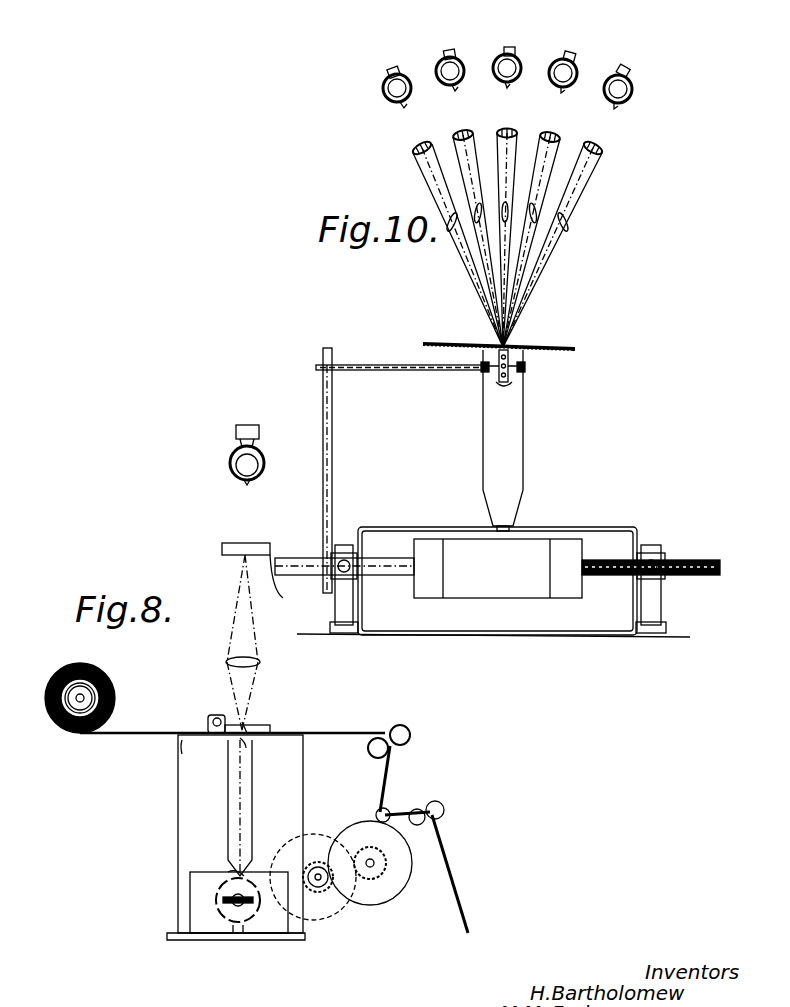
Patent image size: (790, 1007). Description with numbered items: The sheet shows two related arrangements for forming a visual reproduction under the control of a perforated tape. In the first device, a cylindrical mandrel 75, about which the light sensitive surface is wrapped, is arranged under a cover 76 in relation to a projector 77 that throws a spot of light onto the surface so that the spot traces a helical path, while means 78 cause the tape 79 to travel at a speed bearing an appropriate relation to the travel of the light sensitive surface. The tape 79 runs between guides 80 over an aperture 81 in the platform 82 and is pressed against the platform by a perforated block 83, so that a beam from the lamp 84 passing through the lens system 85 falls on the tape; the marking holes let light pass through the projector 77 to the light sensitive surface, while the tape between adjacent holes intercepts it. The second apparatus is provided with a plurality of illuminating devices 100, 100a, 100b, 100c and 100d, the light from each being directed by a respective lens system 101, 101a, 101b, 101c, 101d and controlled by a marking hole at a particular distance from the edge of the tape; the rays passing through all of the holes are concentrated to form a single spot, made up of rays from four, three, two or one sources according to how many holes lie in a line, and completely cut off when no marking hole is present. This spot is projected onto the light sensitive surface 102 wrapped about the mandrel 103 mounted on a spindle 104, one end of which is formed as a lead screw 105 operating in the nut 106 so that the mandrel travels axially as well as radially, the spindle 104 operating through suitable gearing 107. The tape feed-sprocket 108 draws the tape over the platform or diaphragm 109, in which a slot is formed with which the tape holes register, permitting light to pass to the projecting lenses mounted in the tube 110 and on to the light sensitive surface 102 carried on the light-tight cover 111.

In FIG. 10, the illuminating device 100 is at (385, 81).
In FIG. 10, the illuminating device 100a is at (446, 60).
In FIG. 10, the illuminating device 100b is at (506, 48).
In FIG. 10, the illuminating device 100c is at (577, 45).
In FIG. 10, the illuminating device 100d is at (630, 60).
In FIG. 10, the lens system 101 is at (414, 148).
In FIG. 10, the lens system 101a is at (458, 132).
In FIG. 10, the lens system 101b is at (512, 118).
In FIG. 10, the lens system 101c is at (566, 125).
In FIG. 10, the lens system 101d is at (607, 138).
In FIG. 10, the light sensitive surface 102 is at (537, 548).
In FIG. 10, the mandrel 103 is at (570, 552).
In FIG. 10, the spindle 104 is at (371, 557).
In FIG. 10, the lead screw 105 is at (686, 561).
In FIG. 10, the nut 106 is at (651, 548).
In FIG. 10, the gearing 107 is at (323, 441).
In FIG. 10, the tape feed-sprocket 108 is at (512, 356).
In FIG. 10, the platform or diaphragm 109 is at (515, 346).
In FIG. 10, the tube 110 is at (512, 418).
In FIG. 10, the light-tight cover 111 is at (436, 527).
In FIG. 10, the lamp 84 is at (252, 470).
In FIG. 8, the lens system 85 is at (246, 658).
In FIG. 8, the tape 79 is at (125, 689).
In FIG. 8, the guides 80 is at (268, 728).
In FIG. 8, the aperture 81 is at (245, 745).
In FIG. 8, the platform 82 is at (186, 748).
In FIG. 8, the block 83 is at (245, 728).
In FIG. 8, the projector 77 is at (250, 800).
In FIG. 8, the cover 76 is at (205, 898).
In FIG. 8, the cylindrical mandrel 75 is at (234, 878).
In FIG. 8, the tape feeding means 78 is at (363, 900).